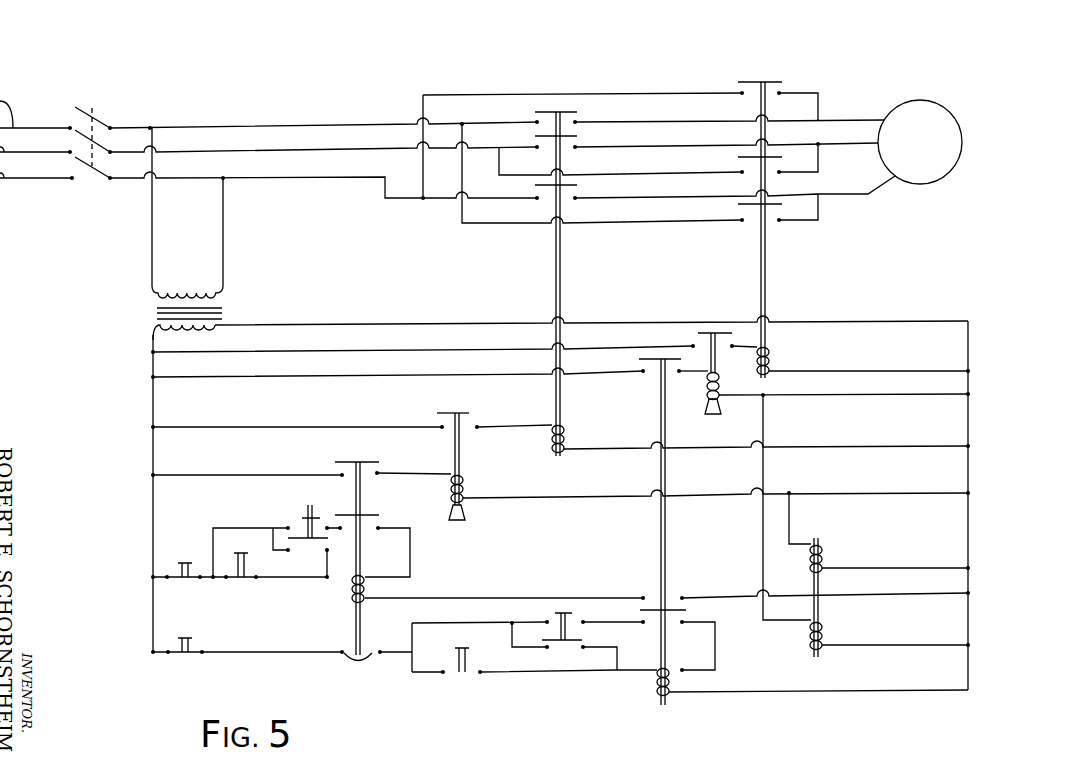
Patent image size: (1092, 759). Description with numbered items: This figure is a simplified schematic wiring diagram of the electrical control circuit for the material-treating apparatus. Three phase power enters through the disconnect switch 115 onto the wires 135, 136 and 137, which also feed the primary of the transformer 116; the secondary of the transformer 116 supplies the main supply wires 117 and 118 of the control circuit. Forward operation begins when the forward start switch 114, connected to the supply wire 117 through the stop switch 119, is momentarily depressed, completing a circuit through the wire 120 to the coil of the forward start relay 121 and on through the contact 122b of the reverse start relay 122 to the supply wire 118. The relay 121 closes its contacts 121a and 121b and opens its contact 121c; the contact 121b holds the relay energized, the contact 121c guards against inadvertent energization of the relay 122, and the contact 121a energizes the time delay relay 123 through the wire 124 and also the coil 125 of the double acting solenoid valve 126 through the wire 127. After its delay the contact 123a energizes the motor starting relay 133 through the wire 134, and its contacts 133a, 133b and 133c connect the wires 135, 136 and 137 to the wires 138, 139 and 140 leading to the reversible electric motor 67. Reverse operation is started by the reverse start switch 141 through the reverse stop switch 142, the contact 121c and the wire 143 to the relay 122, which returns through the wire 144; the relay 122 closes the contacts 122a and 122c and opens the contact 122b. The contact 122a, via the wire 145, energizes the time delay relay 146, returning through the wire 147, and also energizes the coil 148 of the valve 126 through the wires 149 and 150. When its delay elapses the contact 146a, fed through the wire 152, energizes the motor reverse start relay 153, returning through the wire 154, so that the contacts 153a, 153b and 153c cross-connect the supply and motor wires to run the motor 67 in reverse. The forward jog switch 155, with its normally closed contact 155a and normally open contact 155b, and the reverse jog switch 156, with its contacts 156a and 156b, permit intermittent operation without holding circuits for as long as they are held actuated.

The reversible electric motor 67 is at (940, 170).
The forward start switch 114 is at (250, 553).
The disconnect switch 115 is at (94, 120).
The transformer 116 is at (243, 307).
The main supply wire 117 is at (152, 390).
The main supply wire 118 is at (969, 381).
The stop switch 119 is at (195, 560).
The wire 120 is at (316, 579).
The forward start relay 121 is at (370, 590).
The contact of forward start relay 121a is at (366, 461).
The contact of forward start relay 121b is at (366, 515).
The contact of forward start relay 121c is at (349, 659).
The reverse start relay 122 is at (657, 691).
The contact of reverse start relay 122a is at (652, 373).
The contact of reverse start relay 122b is at (676, 597).
The contact of reverse start relay 122c is at (671, 611).
The time delay relay 123 is at (468, 494).
The contact of time delay relay 123a is at (460, 412).
The wire 124 is at (914, 492).
The coil of solenoid operated valve 125 is at (823, 553).
The double acting solenoid operated valve 126 is at (837, 607).
The wire 127 is at (936, 567).
The motor starting relay 133 is at (566, 438).
The contact of motor starting relay 133a is at (574, 114).
The contact of motor starting relay 133b is at (574, 140).
The contact of motor starting relay 133c is at (574, 188).
The wire 134 is at (913, 445).
The wire 135 is at (379, 123).
The wire 136 is at (347, 147).
The wire 137 is at (310, 176).
The wire 138 is at (667, 121).
The wire 139 is at (667, 147).
The wire 140 is at (667, 195).
The reverse start switch 141 is at (461, 649).
The reverse stop switch 142 is at (186, 639).
The wire 143 is at (631, 672).
The wire 144 is at (860, 693).
The wire 145 is at (432, 375).
The time delay relay 146 is at (707, 385).
The contact of time delay relay 146a is at (697, 345).
The wire 147 is at (860, 395).
The coil of double acting valve 148 is at (826, 630).
The wire 149 is at (762, 540).
The wire 150 is at (950, 645).
The wire 152 is at (505, 350).
The motor reverse start relay 153 is at (777, 348).
The contact of motor reverse start relay 153a is at (771, 82).
The contact of motor reverse start relay 153b is at (781, 173).
The contact of motor reverse start relay 153c is at (780, 222).
The wire 154 is at (926, 369).
The forward jog switch 155 is at (311, 505).
The normally closed contact of forward jog switch 155a is at (303, 527).
The normally open contact of forward jog switch 155b is at (327, 551).
The reverse jog switch 156 is at (573, 616).
The contact of reverse jog switch 156a is at (582, 626).
The contact of reverse jog switch 156b is at (571, 647).